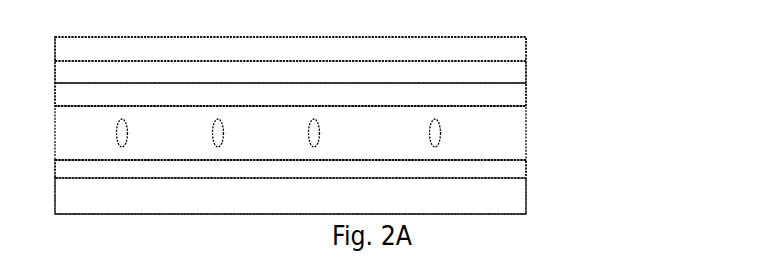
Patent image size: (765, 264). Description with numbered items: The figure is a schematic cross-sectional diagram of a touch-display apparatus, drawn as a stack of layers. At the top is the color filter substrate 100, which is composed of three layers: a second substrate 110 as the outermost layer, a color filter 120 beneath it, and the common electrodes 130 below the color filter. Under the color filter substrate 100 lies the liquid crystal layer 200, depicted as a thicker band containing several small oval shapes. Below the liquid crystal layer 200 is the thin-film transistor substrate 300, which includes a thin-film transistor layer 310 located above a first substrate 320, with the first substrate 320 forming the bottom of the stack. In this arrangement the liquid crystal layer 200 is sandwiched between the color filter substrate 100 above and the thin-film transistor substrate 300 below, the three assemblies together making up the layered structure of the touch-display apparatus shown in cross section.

The color filter substrate 100 is at (366, 60).
The second substrate 110 is at (526, 49).
The color filter 120 is at (526, 72).
The common electrodes 130 is at (526, 93).
The liquid crystal layer 200 is at (526, 133).
The thin-film transistor substrate 300 is at (364, 174).
The thin-film transistor layer 310 is at (526, 167).
The first substrate 320 is at (526, 193).